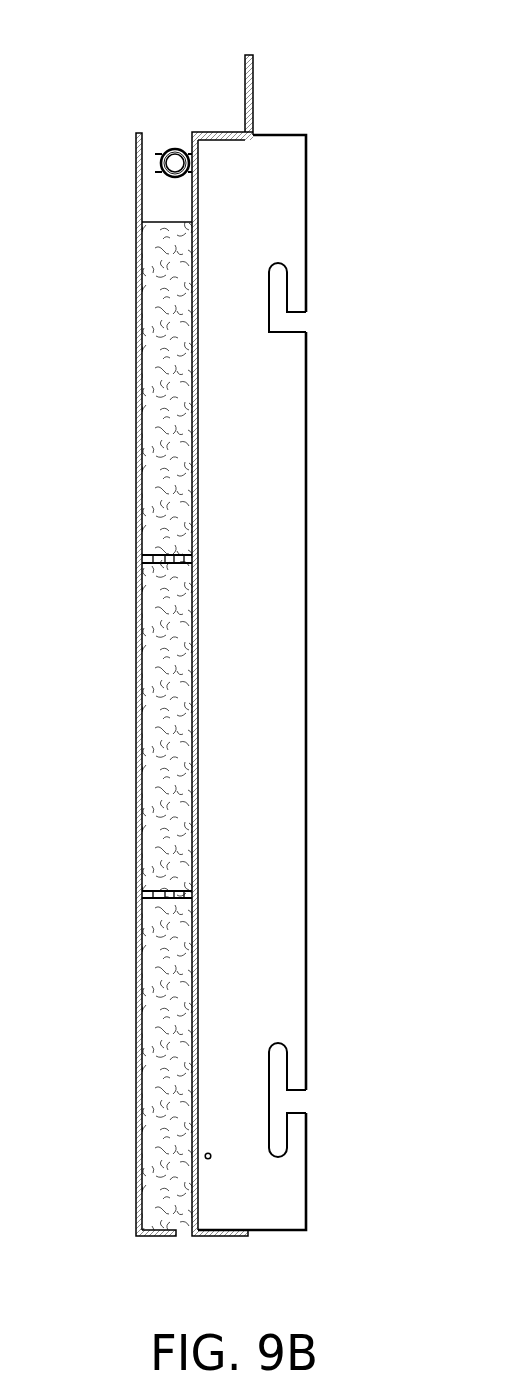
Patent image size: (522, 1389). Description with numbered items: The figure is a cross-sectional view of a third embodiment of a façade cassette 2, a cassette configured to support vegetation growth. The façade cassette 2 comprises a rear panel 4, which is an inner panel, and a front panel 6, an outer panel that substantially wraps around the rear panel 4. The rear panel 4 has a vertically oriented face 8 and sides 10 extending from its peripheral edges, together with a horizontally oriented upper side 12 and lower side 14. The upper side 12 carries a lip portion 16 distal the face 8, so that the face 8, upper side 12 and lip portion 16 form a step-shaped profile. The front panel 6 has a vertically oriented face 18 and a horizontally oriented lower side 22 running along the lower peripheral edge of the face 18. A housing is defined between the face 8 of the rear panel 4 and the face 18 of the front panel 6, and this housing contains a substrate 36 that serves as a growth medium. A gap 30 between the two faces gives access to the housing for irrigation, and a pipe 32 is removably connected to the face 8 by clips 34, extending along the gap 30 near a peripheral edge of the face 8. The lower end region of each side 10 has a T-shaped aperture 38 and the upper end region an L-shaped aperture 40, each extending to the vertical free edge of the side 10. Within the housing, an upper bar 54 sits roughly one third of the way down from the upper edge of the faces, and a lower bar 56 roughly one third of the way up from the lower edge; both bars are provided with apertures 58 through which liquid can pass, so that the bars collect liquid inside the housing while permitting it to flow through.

The façade cassette 2 is at (141, 61).
The rear panel 4 is at (292, 828).
The front panel 6 is at (137, 1022).
The face 8 is at (192, 785).
The sides 10 is at (292, 570).
The upper side 12 is at (213, 132).
The lower side 14 is at (222, 1237).
The lip portion 16 is at (253, 65).
The face 18 is at (137, 618).
The lower side 22 is at (160, 1237).
The gap 30 is at (160, 203).
The pipe 32 is at (160, 158).
The clips 34 is at (171, 148).
The substrate 36 is at (160, 363).
The T-shaped aperture 38 is at (298, 1100).
The L-shaped aperture 40 is at (298, 320).
The upper bar 54 is at (143, 557).
The lower bar 56 is at (143, 895).
The apertures 58 is at (192, 895).